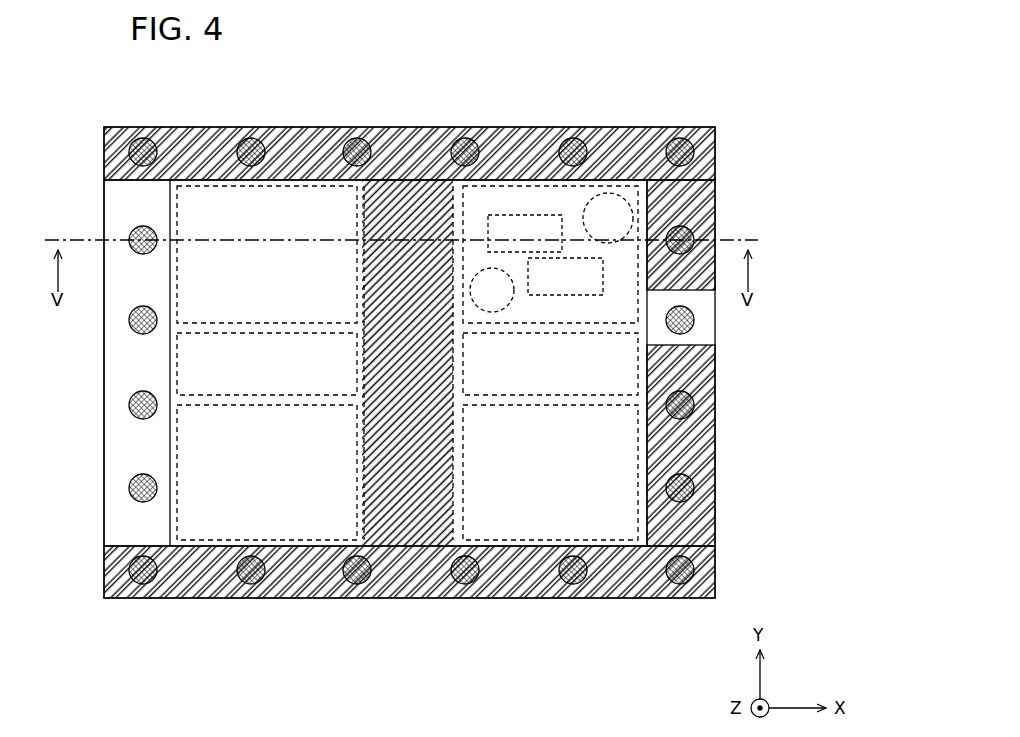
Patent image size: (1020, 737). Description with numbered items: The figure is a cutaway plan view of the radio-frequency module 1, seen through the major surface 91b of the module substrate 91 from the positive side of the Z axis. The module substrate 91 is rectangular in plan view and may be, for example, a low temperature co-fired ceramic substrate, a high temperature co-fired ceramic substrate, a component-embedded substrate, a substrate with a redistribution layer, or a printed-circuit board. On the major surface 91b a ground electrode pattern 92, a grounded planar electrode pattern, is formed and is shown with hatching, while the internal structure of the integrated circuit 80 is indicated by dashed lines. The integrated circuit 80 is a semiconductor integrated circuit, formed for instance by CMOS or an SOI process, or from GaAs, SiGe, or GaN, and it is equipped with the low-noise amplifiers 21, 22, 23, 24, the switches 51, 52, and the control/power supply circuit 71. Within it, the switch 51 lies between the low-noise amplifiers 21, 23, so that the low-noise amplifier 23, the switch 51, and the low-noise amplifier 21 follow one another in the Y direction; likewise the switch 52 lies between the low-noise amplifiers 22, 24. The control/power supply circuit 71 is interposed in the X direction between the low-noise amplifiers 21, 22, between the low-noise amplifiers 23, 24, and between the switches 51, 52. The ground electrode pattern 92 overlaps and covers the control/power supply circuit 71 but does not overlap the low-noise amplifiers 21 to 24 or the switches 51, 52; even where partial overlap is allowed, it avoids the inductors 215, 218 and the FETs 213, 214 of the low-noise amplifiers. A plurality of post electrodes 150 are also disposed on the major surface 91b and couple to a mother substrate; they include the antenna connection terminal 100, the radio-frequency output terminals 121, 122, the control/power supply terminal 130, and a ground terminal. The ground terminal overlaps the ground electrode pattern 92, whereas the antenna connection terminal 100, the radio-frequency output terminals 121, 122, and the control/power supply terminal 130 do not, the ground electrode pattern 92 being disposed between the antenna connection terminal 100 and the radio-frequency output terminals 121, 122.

The radio-frequency module 1 is at (673, 56).
The low-noise amplifier 21 is at (640, 193).
The low-noise amplifier 22 is at (178, 222).
The low-noise amplifier 23 is at (640, 457).
The low-noise amplifier 24 is at (178, 470).
The switch 51 is at (640, 358).
The switch 52 is at (178, 375).
The control/power supply circuit 71 is at (418, 185).
The integrated circuit 80 is at (380, 180).
The module substrate 91 is at (528, 133).
The major surface 91b is at (108, 190).
The ground electrode pattern 92 is at (188, 150).
The antenna connection terminal 100 is at (695, 322).
The radio-frequency output terminal 121 is at (130, 322).
The radio-frequency output terminal 122 is at (130, 484).
The control/power supply terminal 130 is at (571, 582).
The post electrodes 150 is at (140, 580).
The FET 213 is at (565, 296).
The FET 214 is at (490, 238).
The inductor 215 is at (513, 280).
The inductor 218 is at (582, 232).